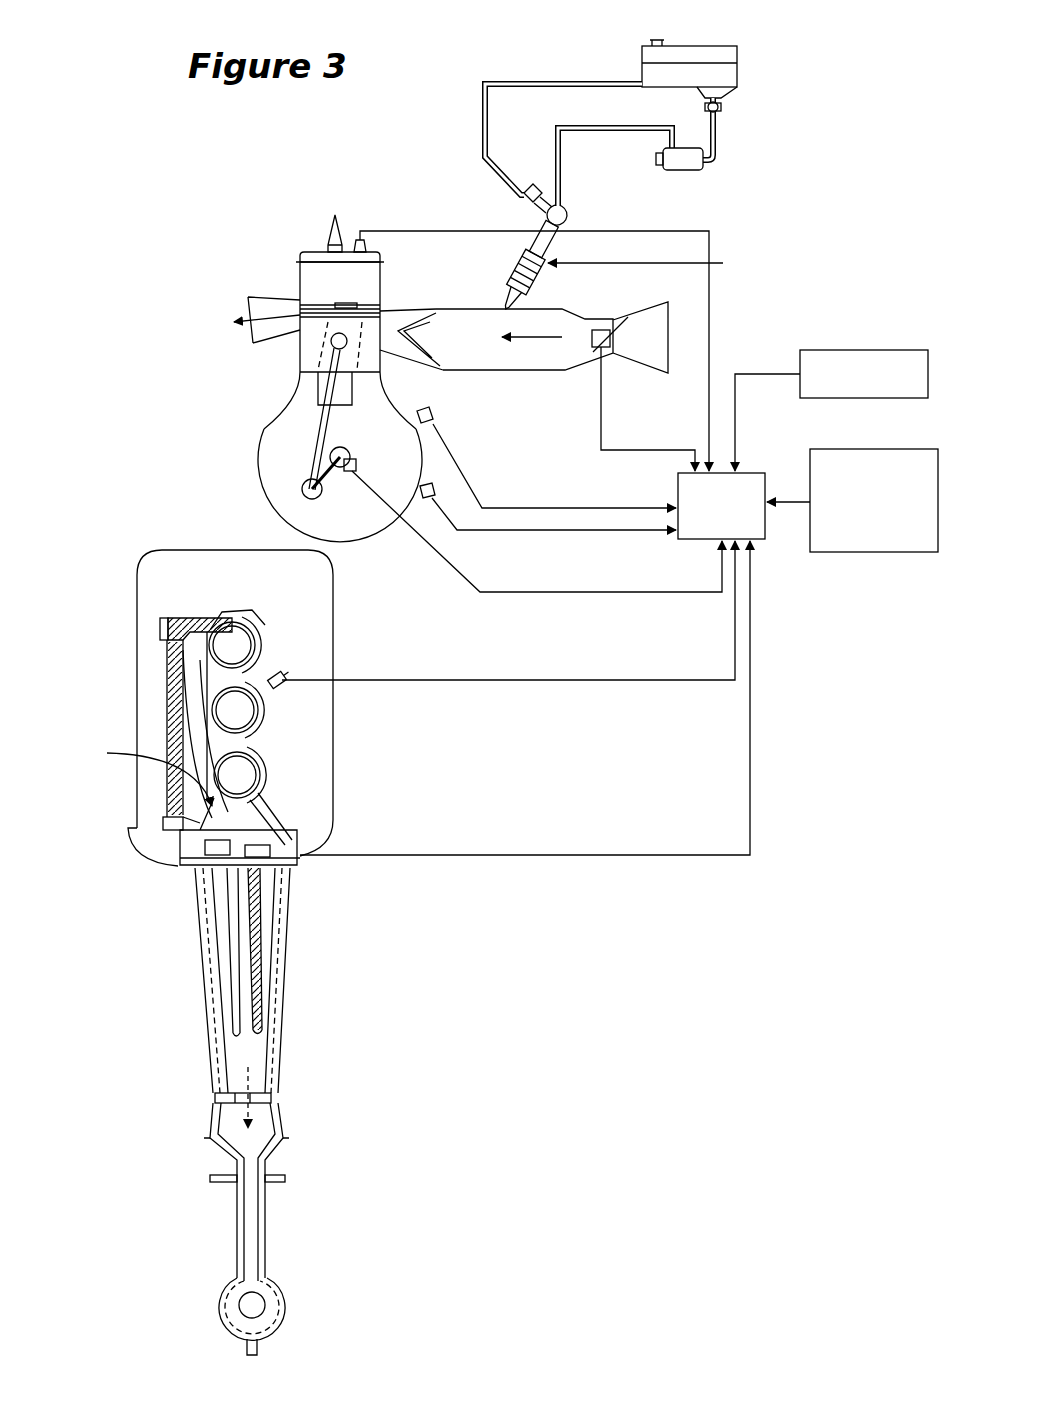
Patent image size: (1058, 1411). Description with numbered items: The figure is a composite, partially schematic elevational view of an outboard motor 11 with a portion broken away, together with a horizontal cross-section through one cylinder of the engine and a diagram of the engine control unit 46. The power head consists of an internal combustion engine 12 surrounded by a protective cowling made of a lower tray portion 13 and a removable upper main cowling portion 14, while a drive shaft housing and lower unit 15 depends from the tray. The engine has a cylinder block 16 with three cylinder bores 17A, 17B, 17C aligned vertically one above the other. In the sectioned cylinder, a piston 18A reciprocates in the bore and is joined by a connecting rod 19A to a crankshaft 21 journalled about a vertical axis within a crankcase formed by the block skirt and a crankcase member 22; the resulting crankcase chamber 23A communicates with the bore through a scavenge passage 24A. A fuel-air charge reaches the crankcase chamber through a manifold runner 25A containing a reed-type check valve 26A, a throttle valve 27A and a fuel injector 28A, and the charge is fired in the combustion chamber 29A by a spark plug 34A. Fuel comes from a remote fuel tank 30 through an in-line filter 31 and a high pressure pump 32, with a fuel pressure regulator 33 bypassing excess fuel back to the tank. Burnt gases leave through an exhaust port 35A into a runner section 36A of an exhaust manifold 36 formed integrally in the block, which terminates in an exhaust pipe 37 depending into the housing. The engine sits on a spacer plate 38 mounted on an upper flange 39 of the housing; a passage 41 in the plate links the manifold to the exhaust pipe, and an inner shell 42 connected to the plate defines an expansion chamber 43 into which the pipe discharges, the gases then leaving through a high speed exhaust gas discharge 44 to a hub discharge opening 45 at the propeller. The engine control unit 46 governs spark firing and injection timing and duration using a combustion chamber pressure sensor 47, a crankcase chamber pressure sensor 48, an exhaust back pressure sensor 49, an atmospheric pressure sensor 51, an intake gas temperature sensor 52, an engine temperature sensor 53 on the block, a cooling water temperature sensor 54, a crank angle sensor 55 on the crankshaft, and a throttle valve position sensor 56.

The outboard motor 11 is at (116, 559).
The internal combustion engine 12 is at (352, 171).
The lower tray portion 13 is at (138, 856).
The upper main cowling portion 14 is at (137, 712).
The drive shaft housing and lower unit 15 is at (204, 1103).
The cylinder block 16 is at (382, 284).
The cylinder bore 17A is at (382, 302).
The cylinder bore 17B is at (262, 733).
The cylinder bore 17C is at (264, 782).
The piston 18A is at (312, 338).
The connecting rod 19A is at (262, 428).
The crankshaft 21 is at (341, 446).
The crankcase member 22 is at (265, 430).
The crankcase chamber 23A is at (268, 477).
The scavenge passage 24A is at (327, 357).
The manifold runner 25A is at (506, 372).
The reed-type check valve 26A is at (421, 323).
The throttle valve 27A is at (620, 320).
The fuel injector 28A is at (523, 260).
The combustion chamber 29A is at (320, 246).
The fuel tank 30 is at (733, 48).
The in-line filter 31 is at (720, 107).
The high pressure pump 32 is at (690, 170).
The fuel pressure regulator 33 is at (537, 183).
The spark plug 34A is at (328, 236).
The exhaust port 35A is at (296, 303).
The exhaust manifold runner section 36A is at (258, 297).
The exhaust manifold 36 is at (152, 718).
The exhaust pipe 37 is at (228, 968).
The spacer plate 38 is at (284, 812).
The upper flange 39 is at (300, 888).
The passage 41 is at (180, 856).
The inner shell 42 is at (265, 977).
The expansion chamber 43 is at (256, 1053).
The high speed exhaust gas discharge 44 is at (215, 1066).
The hub high speed exhaust gas discharge opening 45 is at (270, 1297).
The engine control unit 46 is at (766, 462).
The combustion chamber pressure sensor 47 is at (363, 238).
The crankcase chamber pressure sensor 48 is at (440, 427).
The engine exhaust back pressure sensor 49 is at (300, 848).
The atmospheric pressure sensor 51 is at (873, 350).
The intake gas temperature sensor 52 is at (437, 503).
The engine temperature sensor 53 is at (284, 671).
The cooling water temperature sensor 54 is at (873, 449).
The crank angle sensor 55 is at (347, 473).
The throttle valve position sensor 56 is at (607, 353).